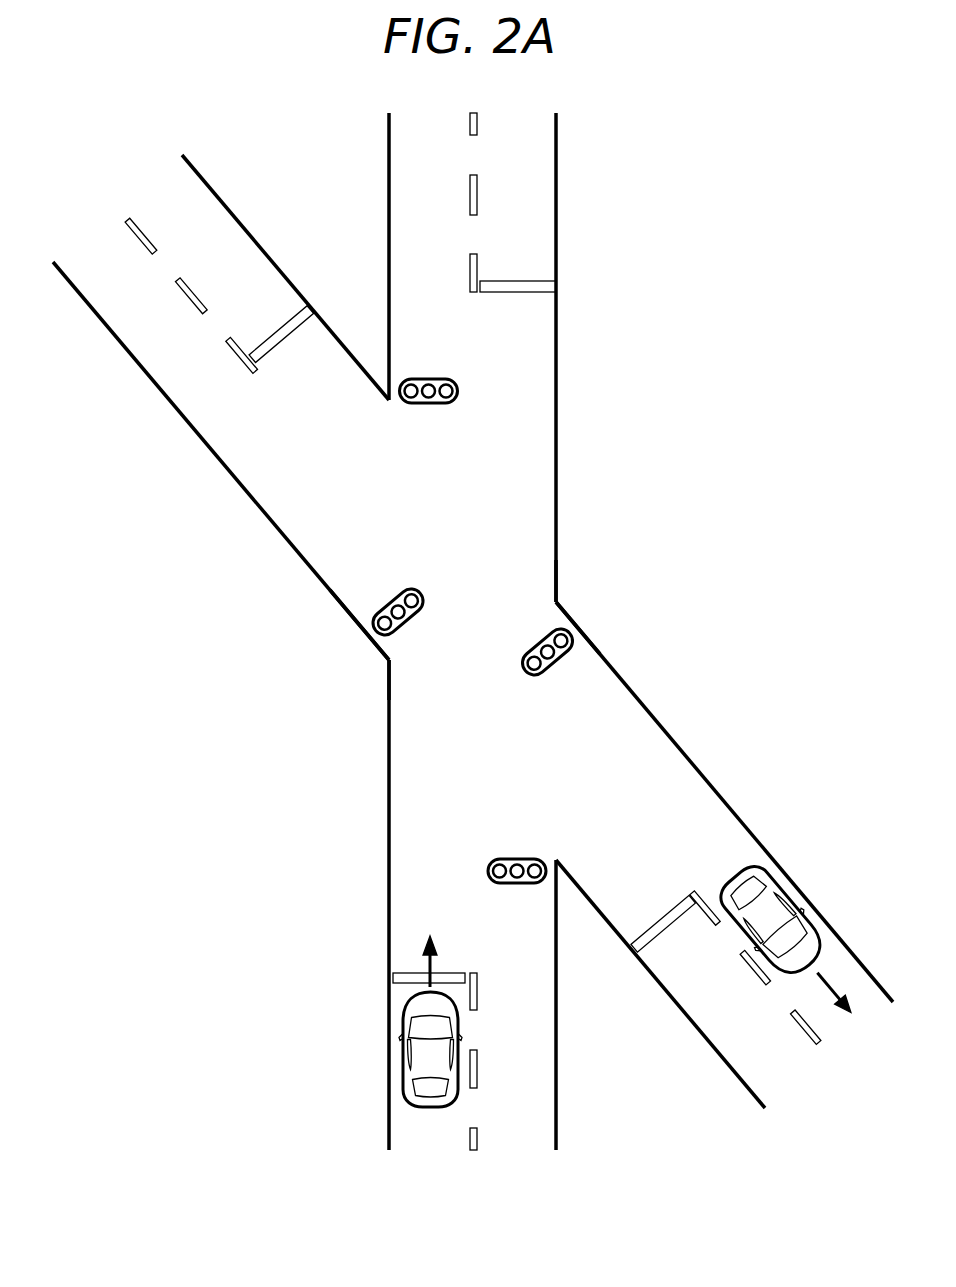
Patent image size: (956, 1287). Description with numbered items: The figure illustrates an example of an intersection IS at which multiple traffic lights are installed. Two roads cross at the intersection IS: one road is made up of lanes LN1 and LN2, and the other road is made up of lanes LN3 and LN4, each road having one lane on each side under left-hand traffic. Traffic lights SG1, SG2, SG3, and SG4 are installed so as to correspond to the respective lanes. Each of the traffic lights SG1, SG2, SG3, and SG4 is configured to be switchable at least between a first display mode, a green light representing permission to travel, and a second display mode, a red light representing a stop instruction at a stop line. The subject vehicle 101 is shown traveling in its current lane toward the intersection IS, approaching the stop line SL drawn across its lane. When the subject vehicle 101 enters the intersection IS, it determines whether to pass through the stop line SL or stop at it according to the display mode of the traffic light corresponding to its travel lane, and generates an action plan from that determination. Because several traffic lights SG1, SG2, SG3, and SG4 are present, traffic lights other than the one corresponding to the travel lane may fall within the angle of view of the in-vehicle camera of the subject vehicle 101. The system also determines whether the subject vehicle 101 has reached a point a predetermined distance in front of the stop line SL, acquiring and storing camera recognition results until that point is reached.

The lane LN1 is at (430, 1138).
The lane LN2 is at (542, 238).
The lane LN3 is at (712, 1023).
The lane LN4 is at (232, 248).
The traffic light SG1 is at (430, 378).
The traffic light SG2 is at (518, 857).
The traffic light SG3 is at (390, 597).
The traffic light SG4 is at (557, 663).
The intersection IS is at (503, 625).
The stop line SL is at (392, 978).
The subject vehicle 101 is at (403, 1058).